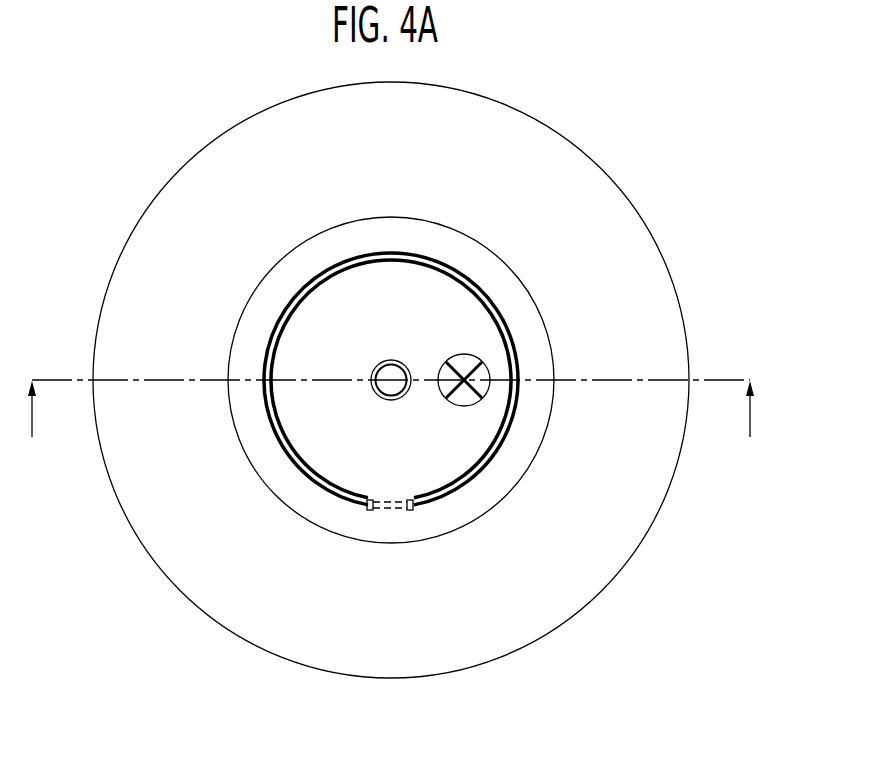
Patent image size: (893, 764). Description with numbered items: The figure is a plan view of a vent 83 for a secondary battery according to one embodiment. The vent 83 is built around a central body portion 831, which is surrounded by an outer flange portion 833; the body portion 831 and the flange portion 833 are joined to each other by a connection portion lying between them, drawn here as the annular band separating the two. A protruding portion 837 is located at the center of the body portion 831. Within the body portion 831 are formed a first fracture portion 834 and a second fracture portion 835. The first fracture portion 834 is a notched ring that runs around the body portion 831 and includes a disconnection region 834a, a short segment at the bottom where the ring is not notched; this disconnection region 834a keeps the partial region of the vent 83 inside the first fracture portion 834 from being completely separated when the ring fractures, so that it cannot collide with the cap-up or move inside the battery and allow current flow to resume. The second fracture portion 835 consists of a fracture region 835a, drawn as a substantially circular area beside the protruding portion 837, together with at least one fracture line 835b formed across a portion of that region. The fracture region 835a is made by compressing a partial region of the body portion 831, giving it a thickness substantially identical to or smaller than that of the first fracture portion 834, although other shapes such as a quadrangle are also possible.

The vent 83 is at (633, 100).
The flange portion 833 is at (602, 184).
The body portion 831 is at (273, 476).
The first fracture portion 834 is at (513, 402).
The disconnection region 834a is at (392, 510).
The second fracture portion 835 is at (752, 280).
The fracture region 835a is at (464, 358).
The fracture line 835b is at (483, 362).
The protruding portion 837 is at (388, 368).